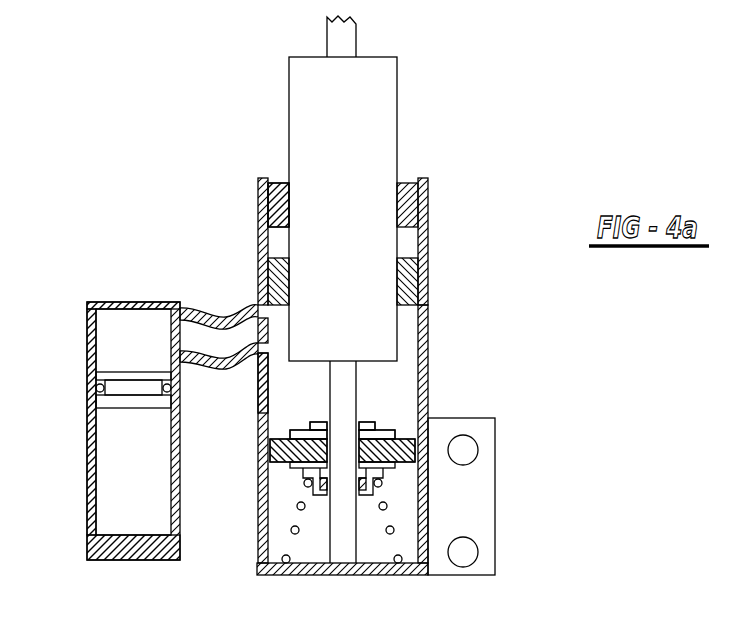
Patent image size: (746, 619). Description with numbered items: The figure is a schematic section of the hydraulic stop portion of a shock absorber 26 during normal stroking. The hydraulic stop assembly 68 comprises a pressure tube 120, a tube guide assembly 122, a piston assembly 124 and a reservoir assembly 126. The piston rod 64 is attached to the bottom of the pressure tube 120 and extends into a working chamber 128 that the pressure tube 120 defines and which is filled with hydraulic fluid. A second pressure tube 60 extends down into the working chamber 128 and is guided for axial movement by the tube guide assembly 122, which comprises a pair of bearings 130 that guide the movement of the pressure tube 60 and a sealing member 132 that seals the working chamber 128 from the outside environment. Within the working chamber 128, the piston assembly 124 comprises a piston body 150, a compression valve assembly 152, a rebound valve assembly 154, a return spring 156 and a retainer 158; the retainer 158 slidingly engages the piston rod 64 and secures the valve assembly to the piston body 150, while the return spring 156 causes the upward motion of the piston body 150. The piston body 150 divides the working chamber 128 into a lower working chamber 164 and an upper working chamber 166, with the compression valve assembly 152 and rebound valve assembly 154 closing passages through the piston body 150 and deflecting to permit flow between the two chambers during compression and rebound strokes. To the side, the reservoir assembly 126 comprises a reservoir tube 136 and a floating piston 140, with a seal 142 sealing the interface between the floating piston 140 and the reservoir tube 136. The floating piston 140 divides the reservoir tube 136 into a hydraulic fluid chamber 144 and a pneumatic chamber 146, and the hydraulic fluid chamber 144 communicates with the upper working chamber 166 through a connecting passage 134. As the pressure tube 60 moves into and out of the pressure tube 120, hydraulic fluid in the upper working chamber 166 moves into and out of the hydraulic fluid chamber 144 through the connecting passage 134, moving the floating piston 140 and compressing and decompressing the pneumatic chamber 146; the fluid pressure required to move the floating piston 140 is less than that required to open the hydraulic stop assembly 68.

The shock absorber 26 is at (400, 88).
The pressure tube 60 is at (353, 212).
The piston rod 64 is at (343, 553).
The hydraulic stop assembly 68 is at (405, 422).
The pressure tube 120 is at (392, 375).
The tube guide assembly 122 is at (437, 160).
The piston assembly 124 is at (286, 420).
The reservoir assembly 126 is at (84, 474).
The working chamber 128 is at (396, 413).
The bearings 130 is at (408, 208).
The sealing member 132 is at (283, 188).
The connecting passage 134 is at (229, 305).
The reservoir tube 136 is at (85, 423).
The floating piston 140 is at (118, 377).
The seal 142 is at (100, 390).
The hydraulic fluid chamber 144 is at (127, 320).
The pneumatic chamber 146 is at (135, 520).
The piston body 150 is at (416, 452).
The compression valve assembly 152 is at (410, 432).
The rebound valve assembly 154 is at (285, 493).
The return spring 156 is at (395, 530).
The retainer 158 is at (383, 475).
The lower working chamber 164 is at (372, 547).
The upper working chamber 166 is at (283, 381).